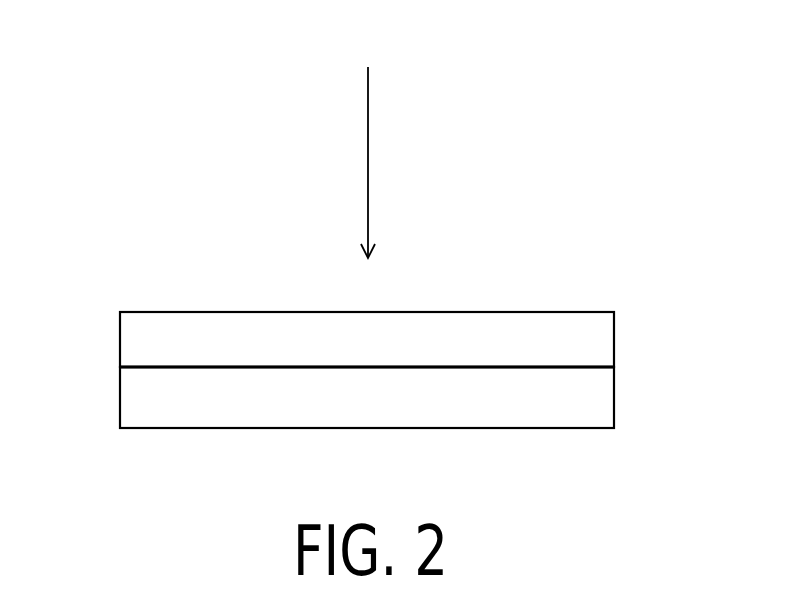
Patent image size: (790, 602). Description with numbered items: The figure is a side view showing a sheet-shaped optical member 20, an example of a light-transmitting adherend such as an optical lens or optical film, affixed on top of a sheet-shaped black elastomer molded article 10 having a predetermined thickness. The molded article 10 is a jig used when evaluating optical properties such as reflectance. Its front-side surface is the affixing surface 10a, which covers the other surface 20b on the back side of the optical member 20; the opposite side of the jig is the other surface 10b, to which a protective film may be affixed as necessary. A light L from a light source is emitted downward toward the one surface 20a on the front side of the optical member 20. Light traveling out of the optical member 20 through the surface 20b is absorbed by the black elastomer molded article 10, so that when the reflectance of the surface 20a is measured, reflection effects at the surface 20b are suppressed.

The light L is at (368, 160).
The black elastomer molded article 10 is at (605, 393).
The affixing surface 10a is at (167, 367).
The other surface 10b is at (168, 428).
The optical member 20 is at (605, 338).
The one surface 20a is at (564, 312).
The other surface 20b is at (566, 368).